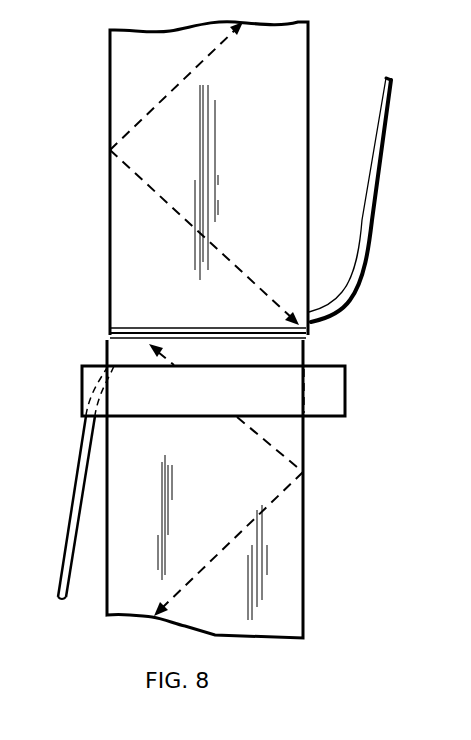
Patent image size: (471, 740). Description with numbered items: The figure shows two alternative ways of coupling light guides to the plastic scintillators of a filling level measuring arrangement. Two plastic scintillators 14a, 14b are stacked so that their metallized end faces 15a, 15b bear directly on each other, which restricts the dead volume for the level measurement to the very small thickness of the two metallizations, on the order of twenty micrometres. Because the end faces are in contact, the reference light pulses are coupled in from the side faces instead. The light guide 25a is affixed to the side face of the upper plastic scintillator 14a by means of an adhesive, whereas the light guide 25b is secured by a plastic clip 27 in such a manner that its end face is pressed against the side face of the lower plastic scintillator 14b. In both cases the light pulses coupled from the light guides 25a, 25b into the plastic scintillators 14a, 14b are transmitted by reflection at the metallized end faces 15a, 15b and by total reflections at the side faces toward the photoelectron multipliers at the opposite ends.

The plastic scintillator 14a is at (116, 116).
The plastic scintillator 14b is at (293, 570).
The metallized end face 15a is at (138, 328).
The metallized end face 15b is at (306, 334).
The plastic clip 27 is at (333, 392).
The light guide 25a is at (383, 127).
The light guide 25b is at (78, 465).